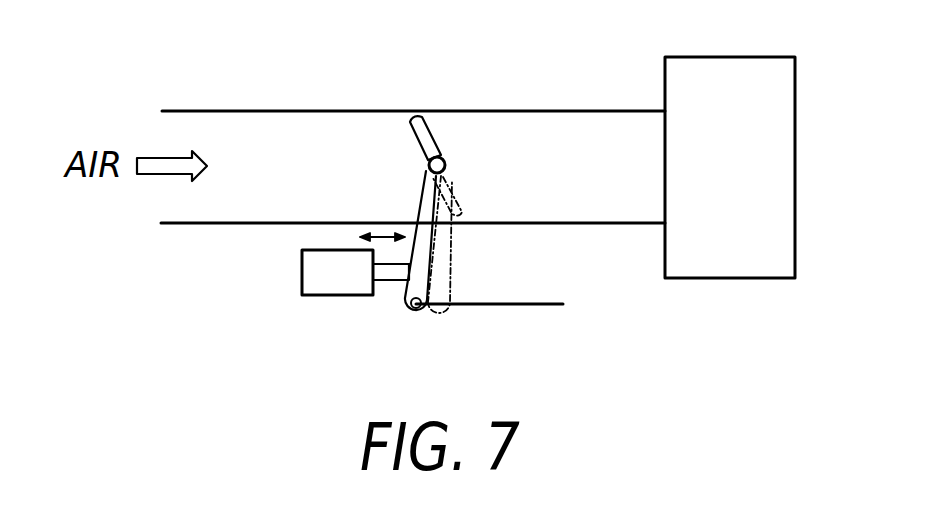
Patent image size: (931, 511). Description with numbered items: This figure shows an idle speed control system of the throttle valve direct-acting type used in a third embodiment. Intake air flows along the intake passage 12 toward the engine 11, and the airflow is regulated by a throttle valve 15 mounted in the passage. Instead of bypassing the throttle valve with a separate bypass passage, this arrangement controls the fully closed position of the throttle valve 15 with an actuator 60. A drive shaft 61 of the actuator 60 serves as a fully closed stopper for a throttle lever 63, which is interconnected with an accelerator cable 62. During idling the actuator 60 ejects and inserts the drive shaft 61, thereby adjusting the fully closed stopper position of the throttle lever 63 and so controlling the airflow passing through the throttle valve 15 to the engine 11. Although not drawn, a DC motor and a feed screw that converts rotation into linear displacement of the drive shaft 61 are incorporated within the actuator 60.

The engine 11 is at (771, 56).
The intake passage 12 is at (294, 110).
The throttle valve 15 is at (438, 142).
The actuator 60 is at (302, 260).
The drive shaft 61 is at (389, 281).
The accelerator cable 62 is at (496, 306).
The throttle lever 63 is at (446, 262).